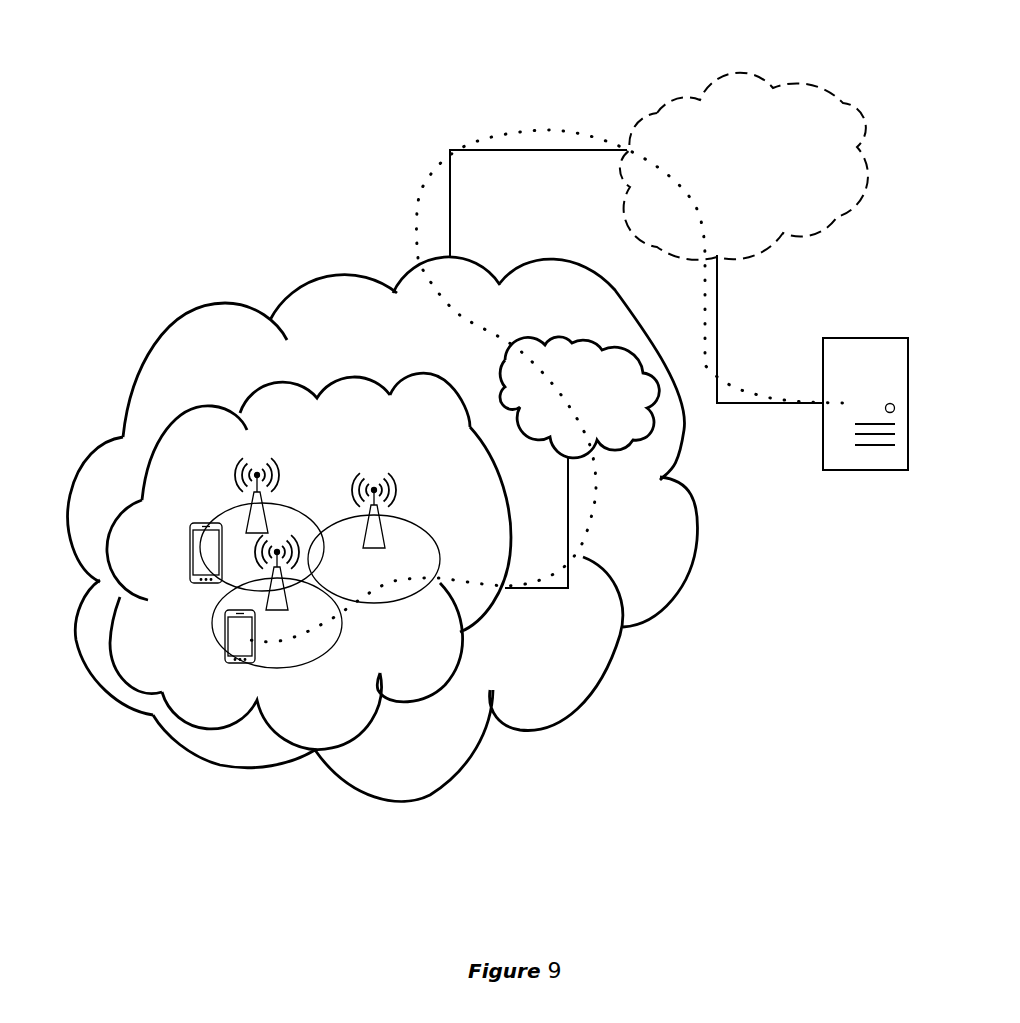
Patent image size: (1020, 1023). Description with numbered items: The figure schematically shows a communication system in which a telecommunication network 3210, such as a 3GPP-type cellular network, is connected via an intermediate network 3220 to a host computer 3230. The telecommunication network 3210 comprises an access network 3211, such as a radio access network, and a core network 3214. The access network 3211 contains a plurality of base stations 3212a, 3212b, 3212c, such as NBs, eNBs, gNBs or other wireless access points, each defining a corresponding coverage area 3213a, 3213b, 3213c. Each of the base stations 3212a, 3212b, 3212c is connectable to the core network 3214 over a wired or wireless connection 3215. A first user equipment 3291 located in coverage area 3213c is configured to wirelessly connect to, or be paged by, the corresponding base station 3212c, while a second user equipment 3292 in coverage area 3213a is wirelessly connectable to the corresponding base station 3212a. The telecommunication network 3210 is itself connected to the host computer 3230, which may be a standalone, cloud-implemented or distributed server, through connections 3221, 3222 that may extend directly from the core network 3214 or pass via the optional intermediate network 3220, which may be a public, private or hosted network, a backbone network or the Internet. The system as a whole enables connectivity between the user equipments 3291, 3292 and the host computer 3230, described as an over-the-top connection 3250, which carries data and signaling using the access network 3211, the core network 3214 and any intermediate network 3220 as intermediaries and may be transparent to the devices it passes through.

The telecommunication network 3210 is at (405, 324).
The access network 3211 is at (365, 432).
The base station 3212a is at (290, 583).
The base station 3212b is at (393, 490).
The base station 3212c is at (235, 477).
The coverage area 3213a is at (340, 592).
The coverage area 3213b is at (440, 578).
The coverage area 3213c is at (193, 522).
The core network 3214 is at (650, 407).
The wired or wireless connection 3215 is at (570, 498).
The intermediate network 3220 is at (770, 174).
The connection 3221 is at (533, 150).
The connection 3222 is at (773, 407).
The host computer 3230 is at (865, 419).
The over-the-top (OTT) connection 3250 is at (423, 177).
The first user equipment (UE) 3291 is at (190, 515).
The second UE 3292 is at (227, 661).